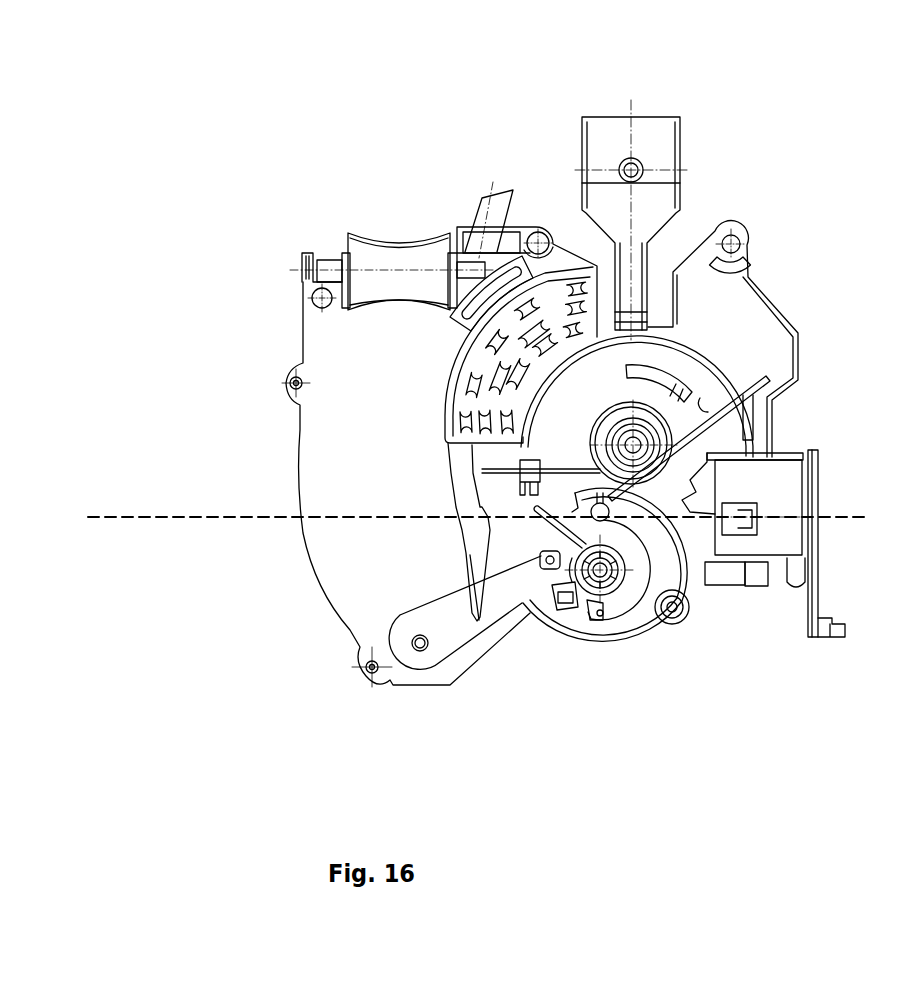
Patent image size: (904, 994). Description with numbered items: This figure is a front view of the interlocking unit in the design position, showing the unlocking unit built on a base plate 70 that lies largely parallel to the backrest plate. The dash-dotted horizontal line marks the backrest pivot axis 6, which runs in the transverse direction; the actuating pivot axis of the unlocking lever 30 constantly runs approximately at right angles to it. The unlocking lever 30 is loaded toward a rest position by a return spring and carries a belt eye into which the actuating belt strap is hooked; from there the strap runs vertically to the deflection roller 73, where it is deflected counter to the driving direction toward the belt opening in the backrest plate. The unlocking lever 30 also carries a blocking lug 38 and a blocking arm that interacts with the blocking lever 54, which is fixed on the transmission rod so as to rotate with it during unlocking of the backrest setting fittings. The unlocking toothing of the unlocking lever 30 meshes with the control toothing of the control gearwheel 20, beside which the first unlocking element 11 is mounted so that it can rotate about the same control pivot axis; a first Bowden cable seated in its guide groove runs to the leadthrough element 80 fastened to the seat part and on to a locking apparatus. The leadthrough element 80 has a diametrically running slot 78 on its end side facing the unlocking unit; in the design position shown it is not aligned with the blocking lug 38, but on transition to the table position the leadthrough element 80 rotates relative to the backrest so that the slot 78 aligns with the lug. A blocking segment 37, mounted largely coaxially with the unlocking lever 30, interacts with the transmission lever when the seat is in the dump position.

The backrest pivot axis 6 is at (268, 520).
The first unlocking element 11 is at (667, 552).
The control gearwheel 20 is at (593, 610).
The unlocking lever 30 is at (563, 440).
The blocking segment 37 is at (573, 287).
The blocking lug 38 is at (733, 438).
The blocking lever 54 is at (644, 222).
The base plate 70 is at (337, 357).
The deflection roller 73 is at (415, 262).
The slot 78 is at (752, 535).
The leadthrough element 80 is at (763, 487).